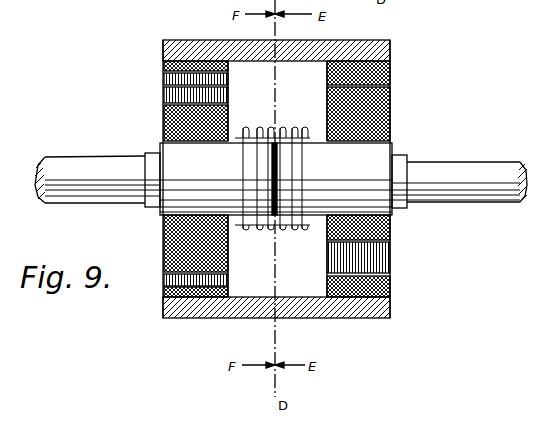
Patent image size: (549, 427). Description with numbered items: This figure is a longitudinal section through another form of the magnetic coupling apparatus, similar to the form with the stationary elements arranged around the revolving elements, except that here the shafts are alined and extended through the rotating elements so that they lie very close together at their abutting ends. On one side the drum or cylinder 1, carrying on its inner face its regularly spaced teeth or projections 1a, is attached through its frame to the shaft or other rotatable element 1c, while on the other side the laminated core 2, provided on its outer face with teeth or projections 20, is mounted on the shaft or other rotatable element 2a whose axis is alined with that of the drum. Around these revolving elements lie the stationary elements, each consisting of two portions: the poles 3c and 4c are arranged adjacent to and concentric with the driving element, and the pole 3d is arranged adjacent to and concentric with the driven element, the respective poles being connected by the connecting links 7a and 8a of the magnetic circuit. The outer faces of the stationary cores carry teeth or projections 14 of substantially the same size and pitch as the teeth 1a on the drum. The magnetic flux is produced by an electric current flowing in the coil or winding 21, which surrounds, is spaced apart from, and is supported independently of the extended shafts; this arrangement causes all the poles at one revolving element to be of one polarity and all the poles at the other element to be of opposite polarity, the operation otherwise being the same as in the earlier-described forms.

The drum or cylinder 1 is at (163, 124).
The teeth or projections 1a is at (163, 97).
The shaft or other rotatable element 1c is at (82, 170).
The core 2 is at (391, 118).
The shaft or other rotatable element 2a is at (460, 173).
The pole 3c is at (391, 71).
The pole 3d is at (163, 65).
The pole 4c is at (388, 290).
The connecting link 7a is at (335, 41).
The connecting link 8a is at (318, 318).
The teeth or projections 14 is at (163, 78).
The teeth or projections 20 is at (380, 257).
The coil or winding 21 is at (265, 137).